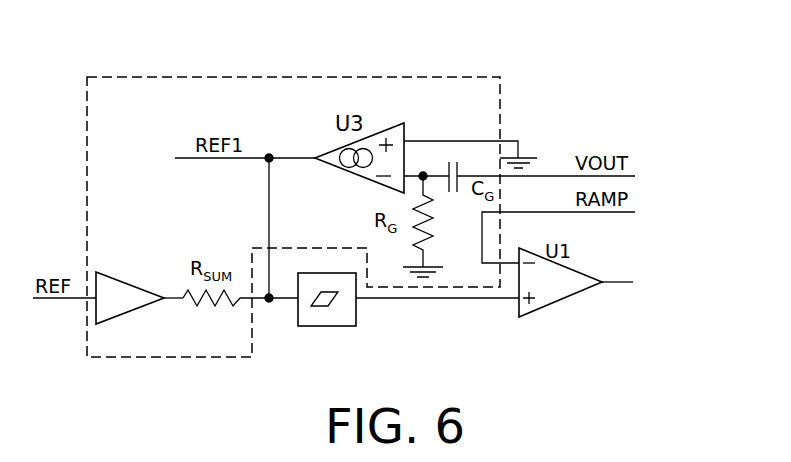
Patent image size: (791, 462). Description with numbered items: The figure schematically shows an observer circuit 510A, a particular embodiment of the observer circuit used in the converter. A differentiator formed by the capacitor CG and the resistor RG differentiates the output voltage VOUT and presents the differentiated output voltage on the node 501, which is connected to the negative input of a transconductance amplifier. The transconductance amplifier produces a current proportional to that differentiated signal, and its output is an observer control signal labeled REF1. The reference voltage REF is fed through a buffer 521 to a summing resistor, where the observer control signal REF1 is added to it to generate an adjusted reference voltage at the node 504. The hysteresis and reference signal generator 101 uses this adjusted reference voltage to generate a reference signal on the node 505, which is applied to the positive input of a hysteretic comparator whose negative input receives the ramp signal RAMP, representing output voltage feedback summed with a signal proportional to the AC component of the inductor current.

The observer circuit 510A is at (336, 77).
The buffer 521 is at (139, 287).
The node 501 is at (427, 179).
The hysteresis and reference signal generator 101 is at (318, 326).
The node 504 is at (284, 300).
The node 505 is at (410, 300).